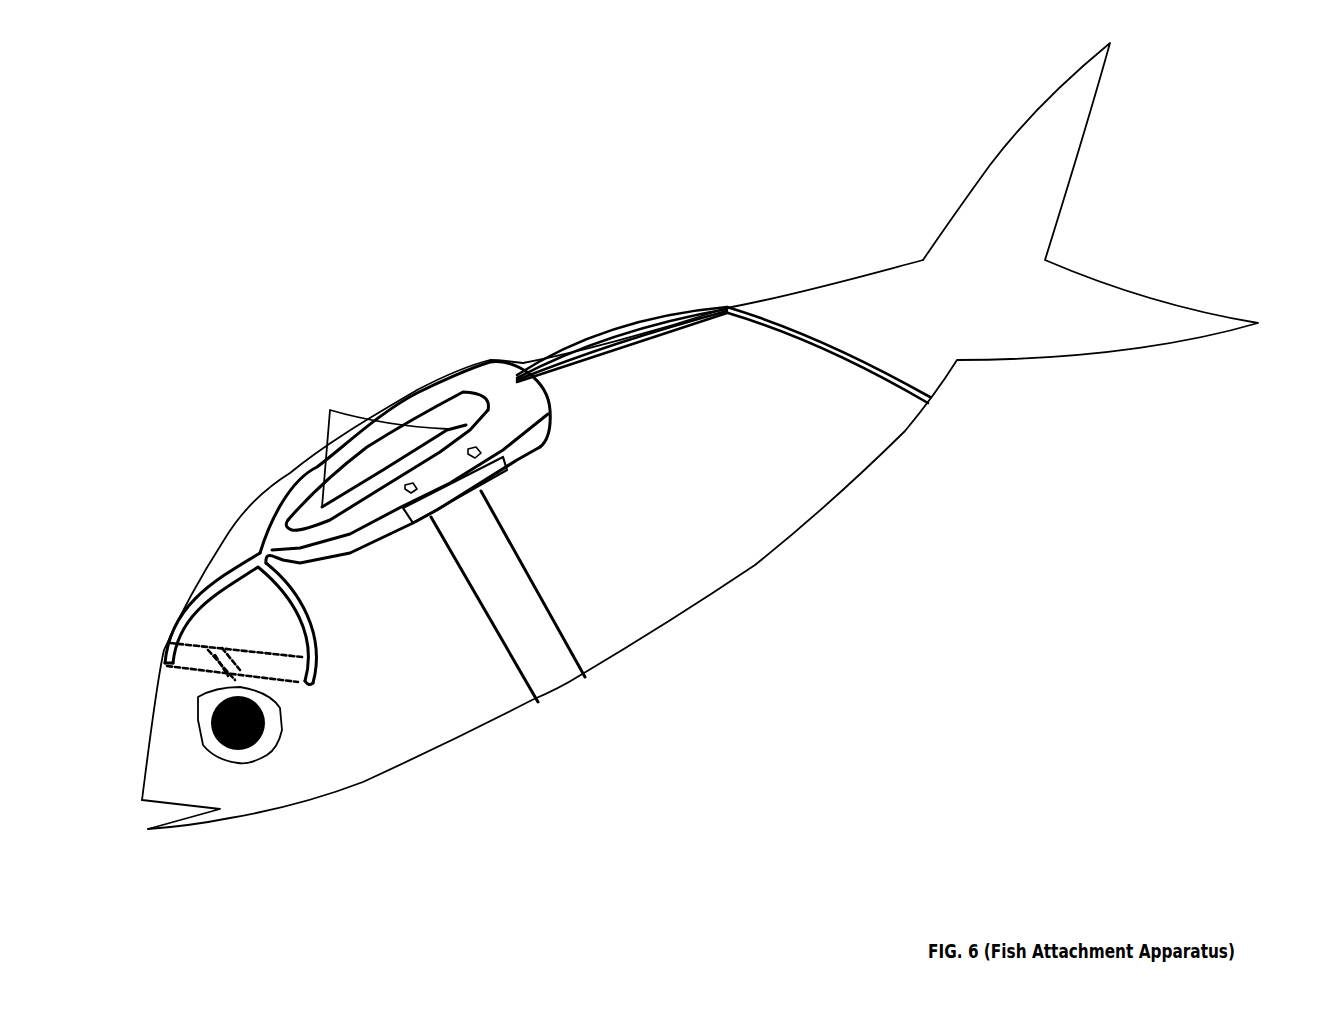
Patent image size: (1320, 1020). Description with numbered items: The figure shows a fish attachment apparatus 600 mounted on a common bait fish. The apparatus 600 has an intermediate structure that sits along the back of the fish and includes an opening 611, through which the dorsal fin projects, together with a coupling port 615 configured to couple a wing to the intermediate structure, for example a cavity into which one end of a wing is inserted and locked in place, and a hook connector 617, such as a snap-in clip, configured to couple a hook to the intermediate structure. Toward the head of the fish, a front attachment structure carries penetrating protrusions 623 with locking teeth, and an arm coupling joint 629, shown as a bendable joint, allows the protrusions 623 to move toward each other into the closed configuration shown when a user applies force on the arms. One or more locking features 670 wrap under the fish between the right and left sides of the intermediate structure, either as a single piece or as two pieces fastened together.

The fish attachment apparatus 600 is at (262, 174).
The opening 611 is at (440, 418).
The coupling port 615 is at (490, 484).
The hook connector 617 is at (484, 453).
The arm coupling joint 629 is at (266, 582).
The penetrating protrusions 623 is at (288, 676).
The locking features 670 is at (551, 665).